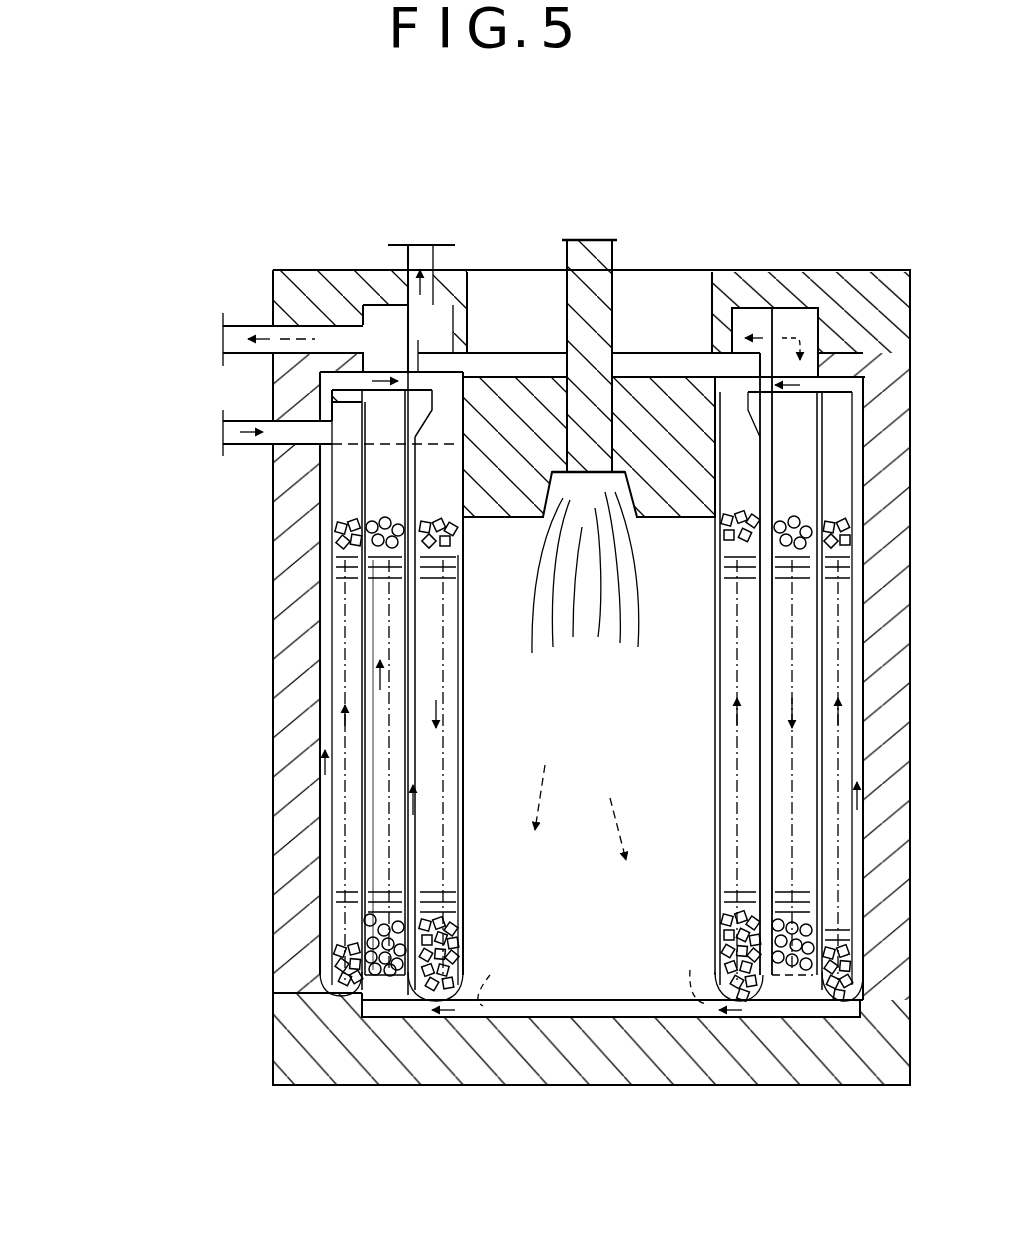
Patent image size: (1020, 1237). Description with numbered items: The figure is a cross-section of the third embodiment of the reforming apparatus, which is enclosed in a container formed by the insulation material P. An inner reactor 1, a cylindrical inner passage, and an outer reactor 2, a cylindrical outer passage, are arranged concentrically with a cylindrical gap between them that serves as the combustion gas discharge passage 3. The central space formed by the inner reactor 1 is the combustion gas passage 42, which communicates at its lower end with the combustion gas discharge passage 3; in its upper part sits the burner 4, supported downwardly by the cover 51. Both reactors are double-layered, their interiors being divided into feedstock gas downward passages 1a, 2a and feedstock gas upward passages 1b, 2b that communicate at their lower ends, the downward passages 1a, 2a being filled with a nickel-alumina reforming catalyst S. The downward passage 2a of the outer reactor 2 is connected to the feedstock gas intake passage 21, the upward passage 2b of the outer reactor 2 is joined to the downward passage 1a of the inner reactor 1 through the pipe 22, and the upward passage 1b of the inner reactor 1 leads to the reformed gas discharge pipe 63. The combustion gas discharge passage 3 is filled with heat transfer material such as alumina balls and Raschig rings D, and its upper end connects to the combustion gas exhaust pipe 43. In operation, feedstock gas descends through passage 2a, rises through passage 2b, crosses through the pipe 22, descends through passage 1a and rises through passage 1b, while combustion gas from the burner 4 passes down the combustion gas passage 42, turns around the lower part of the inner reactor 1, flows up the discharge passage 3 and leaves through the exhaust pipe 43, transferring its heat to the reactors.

The inner reactor 1 is at (465, 840).
The feedstock gas downward passage 1a is at (455, 683).
The feedstock gas upward passage 1b is at (413, 617).
The outer reactor 2 is at (362, 610).
The feedstock gas downward passage 2a is at (346, 675).
The feedstock gas upward passage 2b is at (322, 735).
The combustion gas discharge passage 3 is at (398, 783).
The burner 4 is at (612, 252).
The feedstock gas intake passage 21 is at (245, 450).
The pipe 22 is at (337, 362).
The combustion gas passage 42 is at (667, 772).
The combustion gas exhaust pipe 43 is at (248, 326).
The cover 51 is at (760, 278).
The reformed gas discharge pipe 63 is at (405, 256).
The heat transfer material D is at (372, 922).
The nickel-alumina reforming catalyst S is at (452, 958).
The insulation material P is at (292, 805).